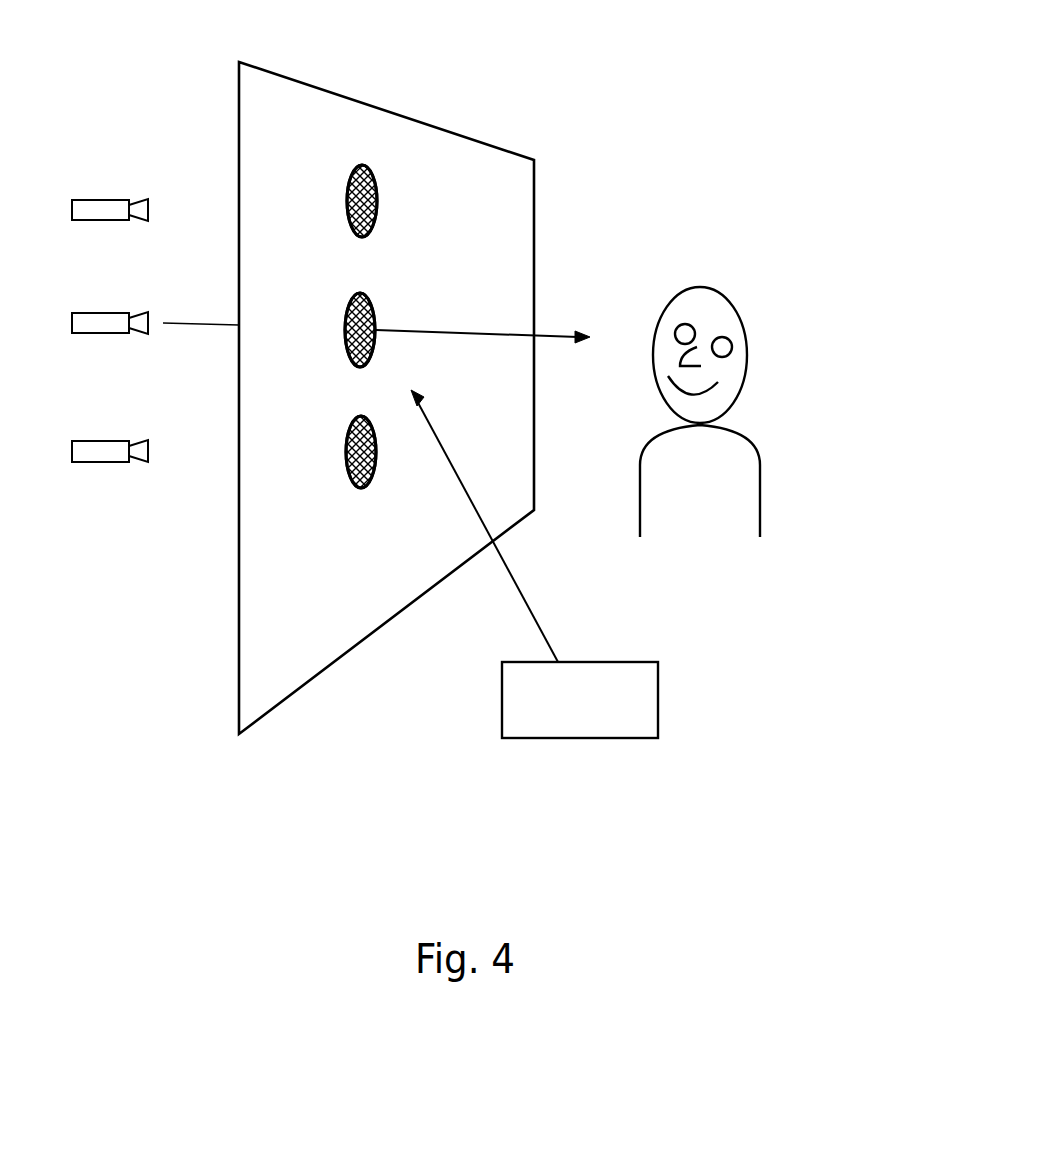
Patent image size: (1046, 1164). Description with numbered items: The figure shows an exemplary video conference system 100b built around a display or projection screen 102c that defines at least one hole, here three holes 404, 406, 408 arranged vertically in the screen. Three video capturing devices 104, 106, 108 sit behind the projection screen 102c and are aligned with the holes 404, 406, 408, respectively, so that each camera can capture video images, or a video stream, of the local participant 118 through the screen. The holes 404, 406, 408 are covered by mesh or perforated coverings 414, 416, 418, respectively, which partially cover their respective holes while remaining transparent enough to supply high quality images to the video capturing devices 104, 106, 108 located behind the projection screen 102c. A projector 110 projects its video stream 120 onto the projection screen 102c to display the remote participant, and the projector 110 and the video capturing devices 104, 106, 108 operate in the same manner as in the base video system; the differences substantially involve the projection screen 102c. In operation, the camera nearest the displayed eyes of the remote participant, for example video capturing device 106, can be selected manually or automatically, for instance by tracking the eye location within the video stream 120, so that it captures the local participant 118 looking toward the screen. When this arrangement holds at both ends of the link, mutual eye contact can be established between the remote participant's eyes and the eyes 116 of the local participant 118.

The video conference system 100b is at (816, 38).
The projection screen 102c is at (359, 98).
The video capturing device 104 is at (112, 200).
The video capturing device 106 is at (112, 313).
The video capturing device 108 is at (112, 441).
The projector 110 is at (600, 724).
The eyes 116 is at (732, 348).
The local participant 118 is at (680, 297).
The video stream 120 is at (445, 448).
The hole 404 is at (347, 205).
The hole 406 is at (345, 348).
The hole 408 is at (348, 468).
The mesh covering 414 is at (377, 213).
The mesh covering 416 is at (375, 313).
The mesh covering 418 is at (375, 457).